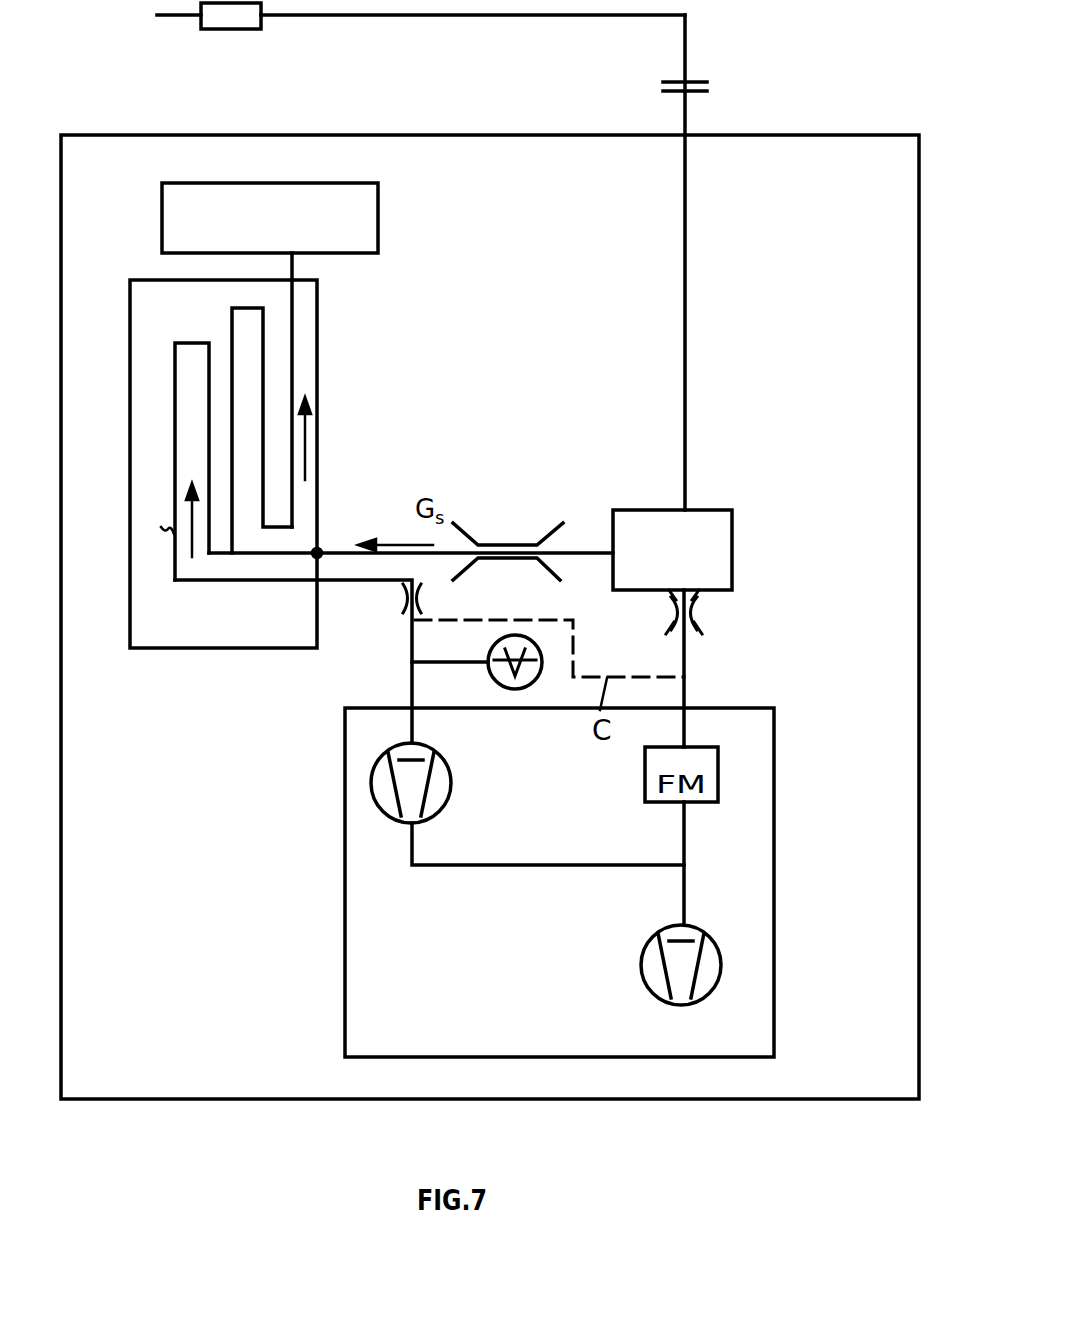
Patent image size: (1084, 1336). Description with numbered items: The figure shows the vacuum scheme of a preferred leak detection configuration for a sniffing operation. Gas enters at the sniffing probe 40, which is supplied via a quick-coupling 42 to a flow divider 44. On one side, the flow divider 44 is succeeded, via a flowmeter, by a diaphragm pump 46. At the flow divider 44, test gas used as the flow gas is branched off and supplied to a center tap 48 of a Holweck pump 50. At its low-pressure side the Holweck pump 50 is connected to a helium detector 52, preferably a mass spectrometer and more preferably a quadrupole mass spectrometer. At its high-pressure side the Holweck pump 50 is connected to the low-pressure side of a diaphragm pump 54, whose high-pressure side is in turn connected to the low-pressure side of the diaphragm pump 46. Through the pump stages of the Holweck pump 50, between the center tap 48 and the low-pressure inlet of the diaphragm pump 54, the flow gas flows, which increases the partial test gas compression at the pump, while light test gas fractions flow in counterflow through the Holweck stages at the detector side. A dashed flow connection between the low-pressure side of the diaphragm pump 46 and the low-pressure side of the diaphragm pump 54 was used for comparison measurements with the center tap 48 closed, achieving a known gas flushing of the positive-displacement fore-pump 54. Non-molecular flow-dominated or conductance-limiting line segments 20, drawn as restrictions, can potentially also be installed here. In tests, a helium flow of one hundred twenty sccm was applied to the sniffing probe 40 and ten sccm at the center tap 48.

The line segments 20 is at (690, 614).
The sniffing probe 40 is at (241, 30).
The quick-coupling 42 is at (703, 80).
The flow divider 44 is at (733, 540).
The diaphragm pump 46 is at (645, 940).
The center tap 48 is at (320, 550).
The Holweck pump 50 is at (182, 650).
The helium detector 52 is at (162, 227).
The diaphragm pump 54 is at (449, 807).